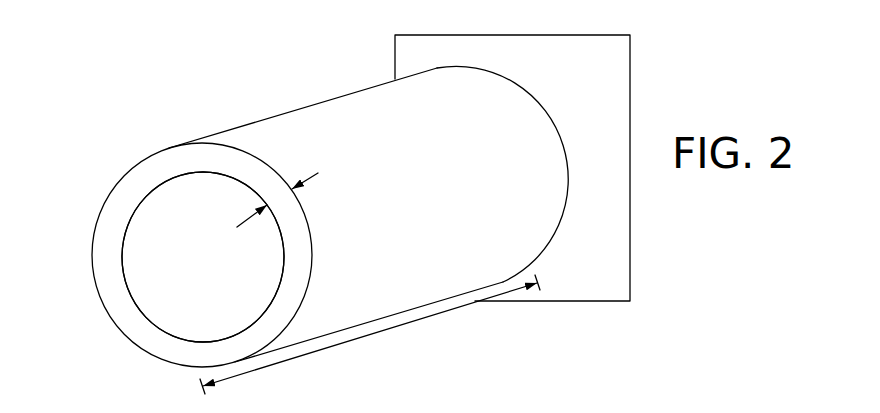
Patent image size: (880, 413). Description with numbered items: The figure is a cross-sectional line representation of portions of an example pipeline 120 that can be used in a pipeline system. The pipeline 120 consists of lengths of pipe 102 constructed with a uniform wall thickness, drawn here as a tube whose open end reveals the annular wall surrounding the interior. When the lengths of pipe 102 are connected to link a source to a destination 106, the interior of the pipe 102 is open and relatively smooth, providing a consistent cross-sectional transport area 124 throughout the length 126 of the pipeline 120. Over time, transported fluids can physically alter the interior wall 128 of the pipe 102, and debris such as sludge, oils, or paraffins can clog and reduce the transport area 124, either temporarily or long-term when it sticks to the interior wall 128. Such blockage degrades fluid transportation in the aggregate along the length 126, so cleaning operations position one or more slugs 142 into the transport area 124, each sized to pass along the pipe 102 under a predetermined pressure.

The pipe 102 is at (135, 168).
The destination 106 is at (626, 63).
The pipeline 120 is at (128, 96).
The transport area 124 is at (146, 317).
The length 126 is at (370, 334).
The interior wall 128 is at (260, 317).
The slug 142 is at (318, 173).